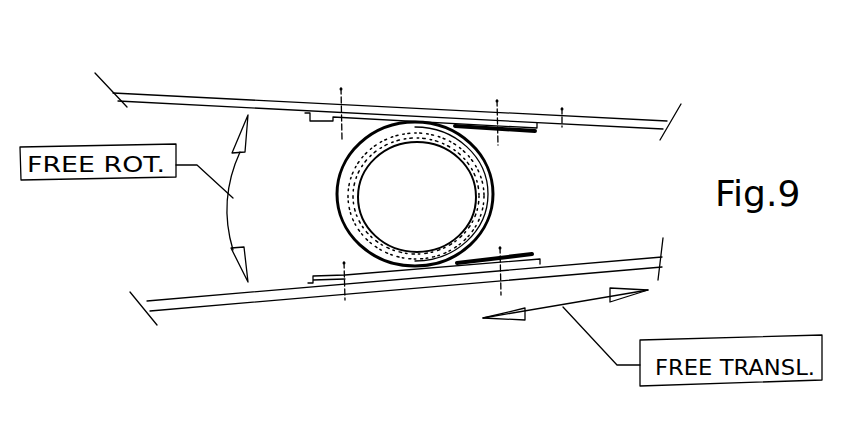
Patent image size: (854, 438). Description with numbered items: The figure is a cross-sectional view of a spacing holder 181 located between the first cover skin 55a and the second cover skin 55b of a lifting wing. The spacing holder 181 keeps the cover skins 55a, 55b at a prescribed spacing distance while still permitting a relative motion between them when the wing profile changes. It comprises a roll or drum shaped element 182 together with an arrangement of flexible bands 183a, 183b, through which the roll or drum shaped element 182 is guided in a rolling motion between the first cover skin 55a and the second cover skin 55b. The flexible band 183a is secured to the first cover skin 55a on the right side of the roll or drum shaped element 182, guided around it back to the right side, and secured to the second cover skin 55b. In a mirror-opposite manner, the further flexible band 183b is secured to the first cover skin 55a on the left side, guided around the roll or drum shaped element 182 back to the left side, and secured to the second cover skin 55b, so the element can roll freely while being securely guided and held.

The first cover skin 55a is at (568, 115).
The second cover skin 55b is at (215, 302).
The spacing holder 181 is at (470, 194).
The roll or drum shaped element 182 is at (450, 137).
The flexible band 183a is at (517, 130).
The flexible band 183b is at (332, 120).